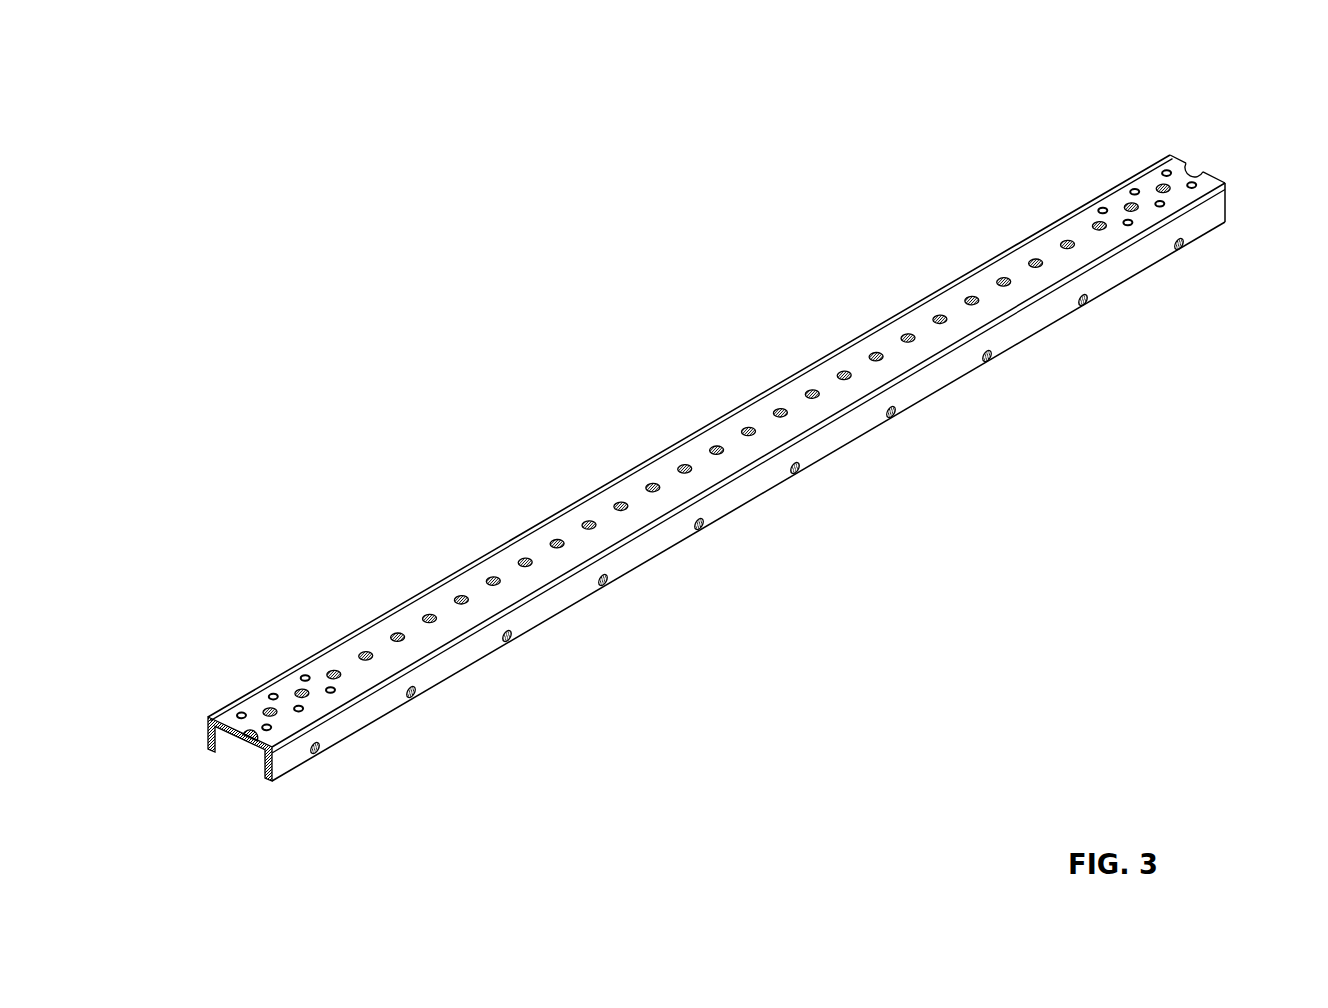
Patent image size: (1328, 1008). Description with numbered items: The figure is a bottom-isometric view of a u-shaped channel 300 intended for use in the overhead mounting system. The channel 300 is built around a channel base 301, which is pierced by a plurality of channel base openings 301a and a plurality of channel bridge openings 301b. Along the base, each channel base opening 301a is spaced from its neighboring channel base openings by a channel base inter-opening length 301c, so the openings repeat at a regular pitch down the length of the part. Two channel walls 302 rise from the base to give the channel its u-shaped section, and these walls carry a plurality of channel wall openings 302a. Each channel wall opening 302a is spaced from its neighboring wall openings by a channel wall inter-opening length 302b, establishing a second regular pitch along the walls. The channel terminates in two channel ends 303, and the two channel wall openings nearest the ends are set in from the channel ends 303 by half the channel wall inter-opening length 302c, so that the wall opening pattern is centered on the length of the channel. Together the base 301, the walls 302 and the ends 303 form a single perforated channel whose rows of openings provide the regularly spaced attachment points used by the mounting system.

The channel 300 is at (236, 110).
The channel base 301 is at (456, 575).
The channel base openings 301a is at (940, 315).
The channel bridge openings 301b is at (306, 677).
The channel base inter-opening length 301c is at (793, 395).
The channel walls 302 is at (461, 671).
The channel wall openings 302a is at (601, 583).
The channel wall inter-opening length 302b is at (847, 449).
The half the channel wall inter-opening length 302c is at (1210, 237).
The channel ends 303 is at (1222, 171).